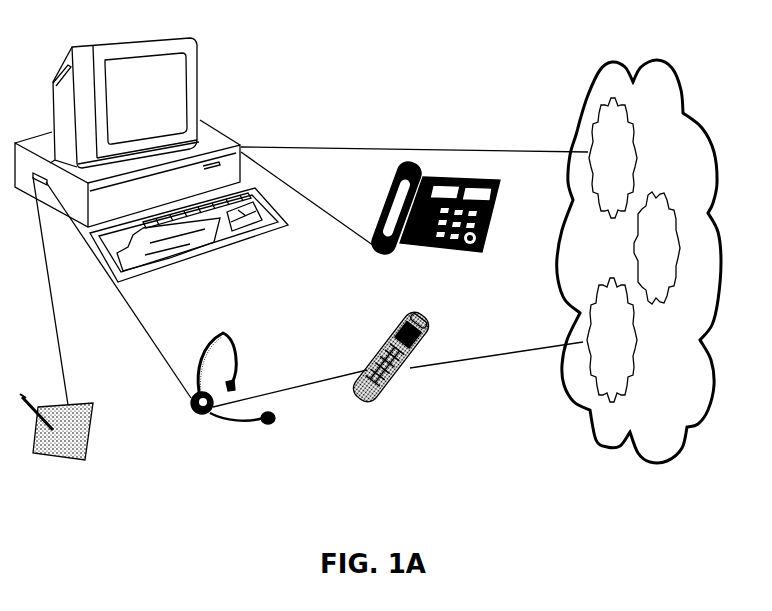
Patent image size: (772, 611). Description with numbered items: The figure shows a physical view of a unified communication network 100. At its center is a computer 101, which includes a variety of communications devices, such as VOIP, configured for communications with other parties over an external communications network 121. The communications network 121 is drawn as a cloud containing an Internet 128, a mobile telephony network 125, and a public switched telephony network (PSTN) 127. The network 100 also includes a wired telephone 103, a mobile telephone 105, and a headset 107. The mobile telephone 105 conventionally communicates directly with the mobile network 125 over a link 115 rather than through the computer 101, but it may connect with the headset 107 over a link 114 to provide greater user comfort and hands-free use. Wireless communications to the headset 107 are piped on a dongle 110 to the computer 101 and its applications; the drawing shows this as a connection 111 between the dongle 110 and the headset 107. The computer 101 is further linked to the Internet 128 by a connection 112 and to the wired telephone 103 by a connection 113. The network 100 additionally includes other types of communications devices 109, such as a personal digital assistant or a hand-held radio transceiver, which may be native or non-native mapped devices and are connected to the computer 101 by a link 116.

The unified communication network 100 is at (288, 68).
The computer 101 is at (153, 106).
The wired telephone 103 is at (444, 268).
The mobile telephone 105 is at (393, 418).
The headset 107 is at (227, 444).
The other communications devices 109 is at (50, 482).
The dongle 110 is at (50, 195).
The connection 111 is at (143, 327).
The internet connection 112 is at (414, 142).
The telephone connection 113 is at (326, 214).
The headset to mobile phone connection 114 is at (308, 385).
The mobile network connection 115 is at (494, 356).
The tablet connection 116 is at (56, 332).
The external communications network 121 is at (702, 373).
The mobile telephony network 125 is at (630, 331).
The public switched telephony network (PSTN) 127 is at (674, 235).
The internet 128 is at (629, 146).